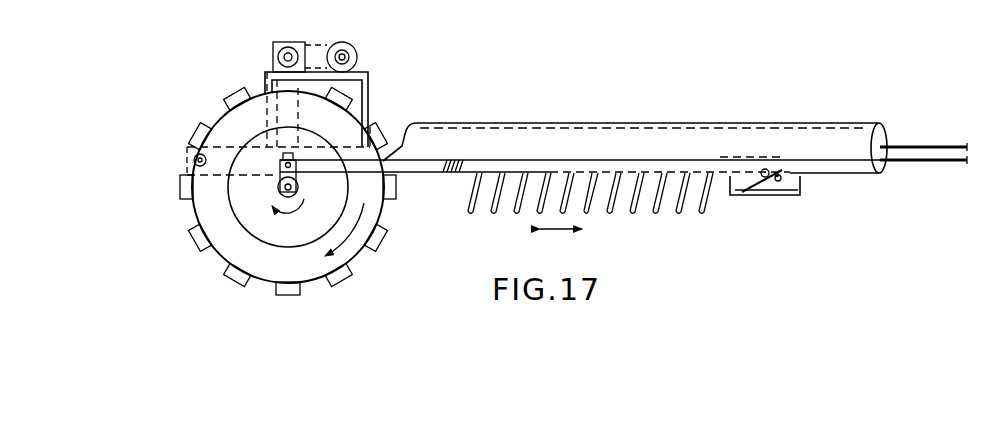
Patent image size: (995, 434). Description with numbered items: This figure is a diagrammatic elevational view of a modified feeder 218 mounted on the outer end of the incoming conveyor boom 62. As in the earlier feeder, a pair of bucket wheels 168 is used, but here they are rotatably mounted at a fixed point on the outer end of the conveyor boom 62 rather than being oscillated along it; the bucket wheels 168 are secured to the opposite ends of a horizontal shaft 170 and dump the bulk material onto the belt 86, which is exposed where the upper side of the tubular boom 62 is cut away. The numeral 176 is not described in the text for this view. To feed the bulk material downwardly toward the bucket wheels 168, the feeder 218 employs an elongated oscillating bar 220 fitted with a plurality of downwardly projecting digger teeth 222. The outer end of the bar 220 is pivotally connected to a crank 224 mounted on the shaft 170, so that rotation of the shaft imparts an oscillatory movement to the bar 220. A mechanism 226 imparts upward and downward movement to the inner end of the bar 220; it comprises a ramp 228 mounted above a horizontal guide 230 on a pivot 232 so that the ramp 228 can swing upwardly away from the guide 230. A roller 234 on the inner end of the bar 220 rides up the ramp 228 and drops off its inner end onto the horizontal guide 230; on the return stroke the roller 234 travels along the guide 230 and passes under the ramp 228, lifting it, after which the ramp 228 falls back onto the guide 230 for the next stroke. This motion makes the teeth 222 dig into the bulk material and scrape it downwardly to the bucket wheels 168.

The incoming conveyor boom 62 is at (855, 124).
The belt 86 is at (941, 160).
The bucket wheels 168 is at (190, 210).
The horizontal shaft 170 is at (280, 187).
The lugs 176 is at (336, 283).
The modified feeder 218 is at (212, 267).
The oscillating bar 220 is at (645, 163).
The digger teeth 222 is at (665, 218).
The crank 224 is at (283, 150).
The mechanism 226 is at (781, 171).
The ramp 228 is at (757, 196).
The horizontal guide 230 is at (795, 196).
The pivot 232 is at (805, 181).
The roller 234 is at (761, 169).